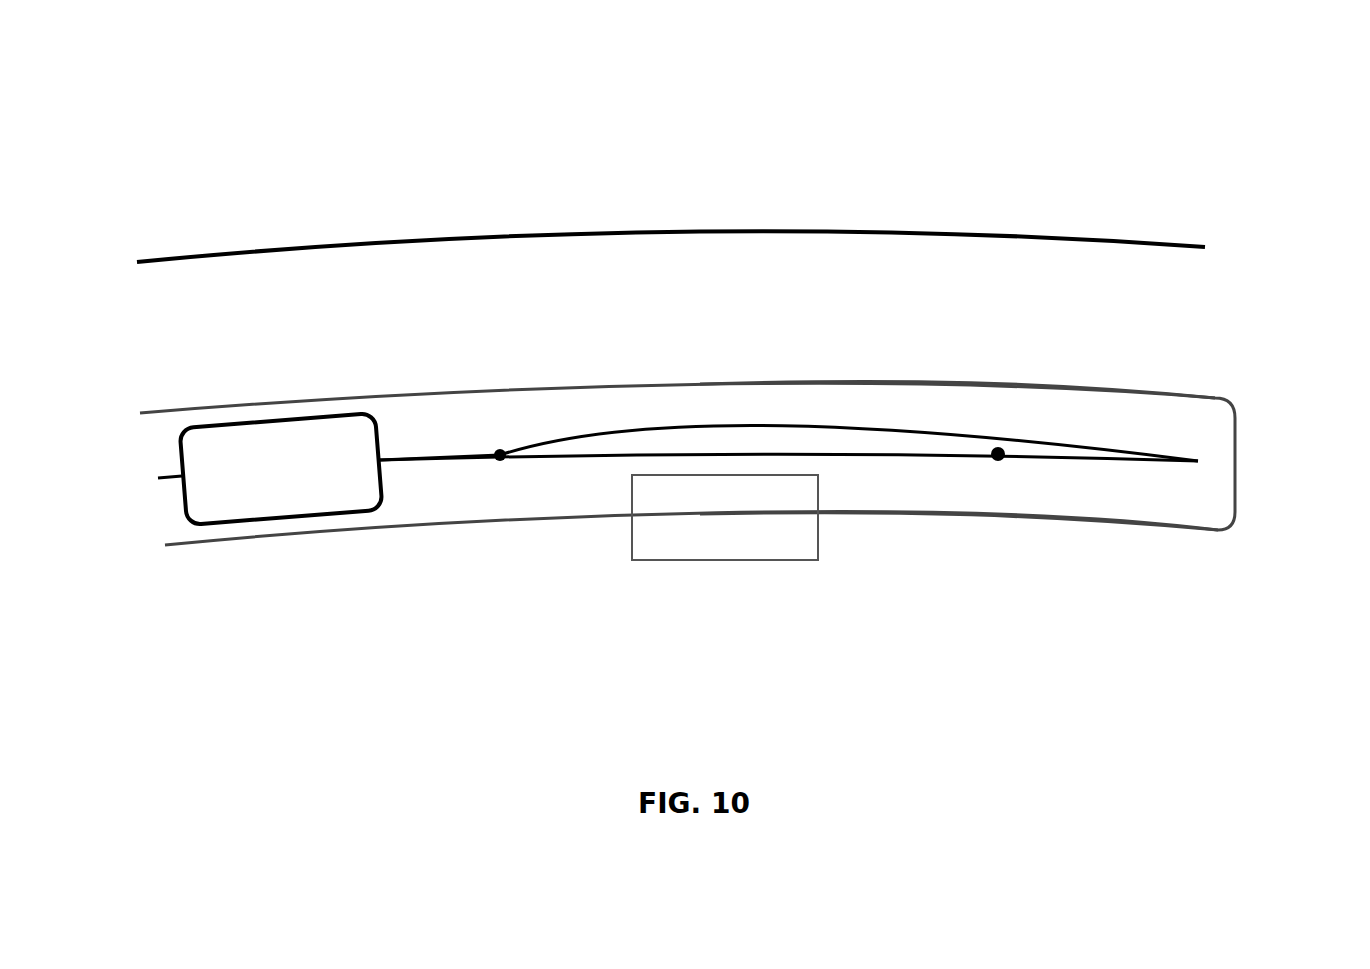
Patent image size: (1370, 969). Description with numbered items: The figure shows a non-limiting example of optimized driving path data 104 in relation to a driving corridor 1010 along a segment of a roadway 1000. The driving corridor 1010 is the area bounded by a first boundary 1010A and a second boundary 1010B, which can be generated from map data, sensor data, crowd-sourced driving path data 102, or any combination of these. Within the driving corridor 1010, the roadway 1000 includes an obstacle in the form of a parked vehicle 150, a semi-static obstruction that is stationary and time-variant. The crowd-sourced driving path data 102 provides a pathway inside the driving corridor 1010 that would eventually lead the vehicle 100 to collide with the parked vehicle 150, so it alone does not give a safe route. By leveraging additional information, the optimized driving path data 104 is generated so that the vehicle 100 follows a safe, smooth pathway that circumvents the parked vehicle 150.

The roadway 1000 is at (1090, 165).
The driving corridor 1010 is at (1230, 405).
The first boundary 1010A is at (1146, 396).
The second boundary 1010B is at (1156, 540).
The vehicle 100 is at (270, 469).
The crowd-sourced driving path data 102 is at (952, 468).
The optimized driving path data 104 is at (434, 445).
The parked vehicle 150 is at (725, 517).